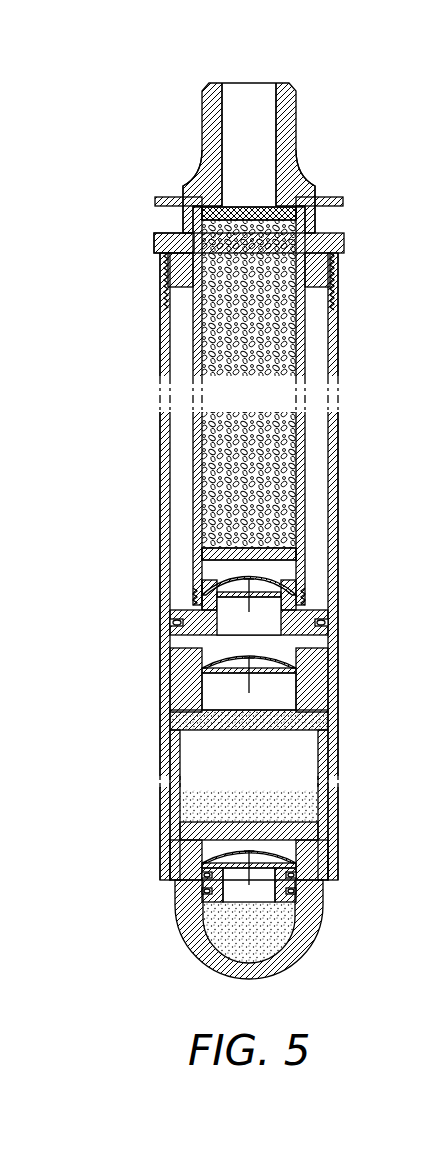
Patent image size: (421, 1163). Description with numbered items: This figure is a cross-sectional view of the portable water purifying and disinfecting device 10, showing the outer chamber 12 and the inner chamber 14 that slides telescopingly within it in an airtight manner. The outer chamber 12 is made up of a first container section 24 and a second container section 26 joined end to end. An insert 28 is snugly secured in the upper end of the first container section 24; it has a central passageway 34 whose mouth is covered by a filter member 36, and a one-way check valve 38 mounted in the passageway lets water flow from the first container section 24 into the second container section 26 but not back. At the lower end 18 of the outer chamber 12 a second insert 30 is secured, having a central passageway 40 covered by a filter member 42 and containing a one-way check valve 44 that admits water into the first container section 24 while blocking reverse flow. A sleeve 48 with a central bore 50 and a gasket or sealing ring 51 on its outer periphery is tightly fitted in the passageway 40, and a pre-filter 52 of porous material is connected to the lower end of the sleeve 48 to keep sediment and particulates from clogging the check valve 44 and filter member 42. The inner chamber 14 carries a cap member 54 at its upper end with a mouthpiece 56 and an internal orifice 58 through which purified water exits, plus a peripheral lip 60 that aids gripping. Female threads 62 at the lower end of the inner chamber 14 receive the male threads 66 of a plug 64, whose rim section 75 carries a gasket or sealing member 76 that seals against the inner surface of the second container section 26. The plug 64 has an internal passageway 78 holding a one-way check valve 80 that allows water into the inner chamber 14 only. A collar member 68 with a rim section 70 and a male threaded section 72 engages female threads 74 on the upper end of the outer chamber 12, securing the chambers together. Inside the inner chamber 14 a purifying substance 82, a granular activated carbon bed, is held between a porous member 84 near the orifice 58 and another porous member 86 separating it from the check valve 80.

The portable water purifying and disinfecting device 10 is at (114, 410).
The outer chamber 12 is at (164, 678).
The inner chamber 14 is at (305, 323).
The lower end 18 is at (161, 840).
The first container section 24 is at (339, 793).
The second container section 26 is at (161, 478).
The insert 28 is at (313, 692).
The insert 30 is at (311, 858).
The central passageway 34 is at (210, 693).
The filter member 36 is at (298, 723).
The one-way check valve 38 is at (283, 660).
The central passageway 40 is at (213, 845).
The filter member 42 is at (318, 830).
The one-way check valve 44 is at (203, 875).
The sleeve 48 is at (261, 888).
The central bore 50 is at (281, 900).
The gasket or sealing ring 51 is at (208, 893).
The pre-filter 52 is at (303, 948).
The cap member 54 is at (291, 172).
The mouthpiece 56 is at (283, 95).
The internal orifice 58 is at (244, 93).
The peripheral lip 60 is at (333, 193).
The female threads 62 is at (299, 587).
The plug 64 is at (311, 615).
The male threads 66 is at (203, 585).
The collar member 68 is at (323, 240).
The rim section 70 is at (154, 243).
The male threaded section 72 is at (318, 268).
The female threads 74 is at (162, 300).
The rim section 75 is at (177, 630).
The gasket or sealing member 76 is at (320, 622).
The internal passageway 78 is at (238, 627).
The one-way check valve 80 is at (266, 573).
The purifying substance 82 is at (267, 357).
The porous member 84 is at (237, 205).
The porous member 86 is at (257, 545).